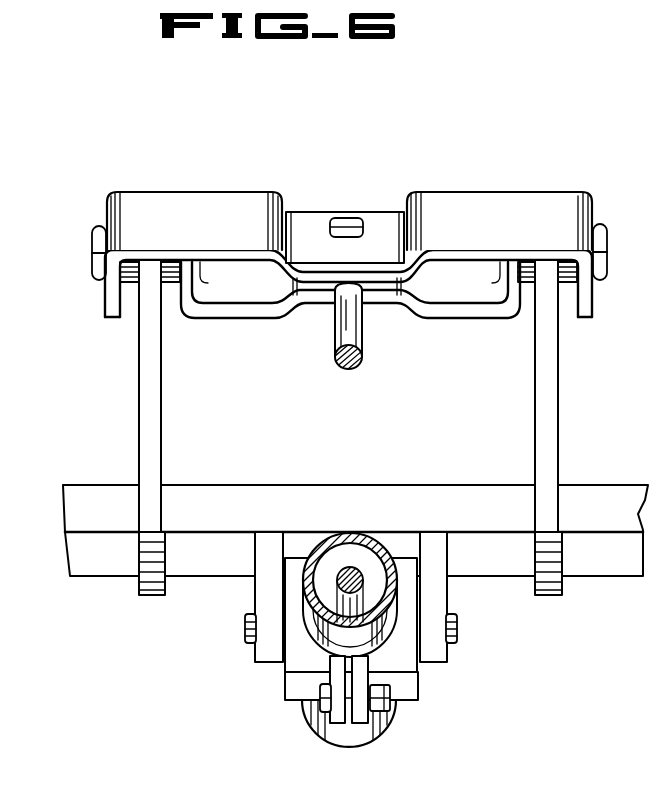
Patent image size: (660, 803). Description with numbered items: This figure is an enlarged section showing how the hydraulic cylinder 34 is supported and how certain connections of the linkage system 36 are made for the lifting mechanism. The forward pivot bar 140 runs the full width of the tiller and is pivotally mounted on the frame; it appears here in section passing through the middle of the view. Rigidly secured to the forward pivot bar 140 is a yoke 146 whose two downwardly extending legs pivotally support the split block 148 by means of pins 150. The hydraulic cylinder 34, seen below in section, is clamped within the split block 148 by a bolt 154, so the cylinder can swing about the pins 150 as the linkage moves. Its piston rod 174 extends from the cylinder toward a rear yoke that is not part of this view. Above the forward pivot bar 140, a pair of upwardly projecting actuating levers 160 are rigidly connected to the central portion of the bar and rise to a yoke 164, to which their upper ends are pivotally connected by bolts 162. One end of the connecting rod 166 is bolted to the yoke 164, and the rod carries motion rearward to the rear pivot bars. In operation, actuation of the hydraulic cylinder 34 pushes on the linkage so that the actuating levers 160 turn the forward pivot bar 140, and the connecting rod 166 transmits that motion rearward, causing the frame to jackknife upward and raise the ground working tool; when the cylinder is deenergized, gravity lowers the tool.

The linkage system 36 is at (556, 174).
The yoke 164 is at (212, 207).
The bolts 162 is at (92, 259).
The connecting rod 166 is at (363, 348).
The actuating levers 160 is at (158, 383).
The forward pivot bar 140 is at (454, 488).
The piston rod 174 is at (352, 567).
The yoke 146 is at (443, 603).
The pins 150 is at (458, 632).
The split block 148 is at (418, 673).
The bolt 154 is at (320, 692).
The hydraulic cylinder 34 is at (350, 746).